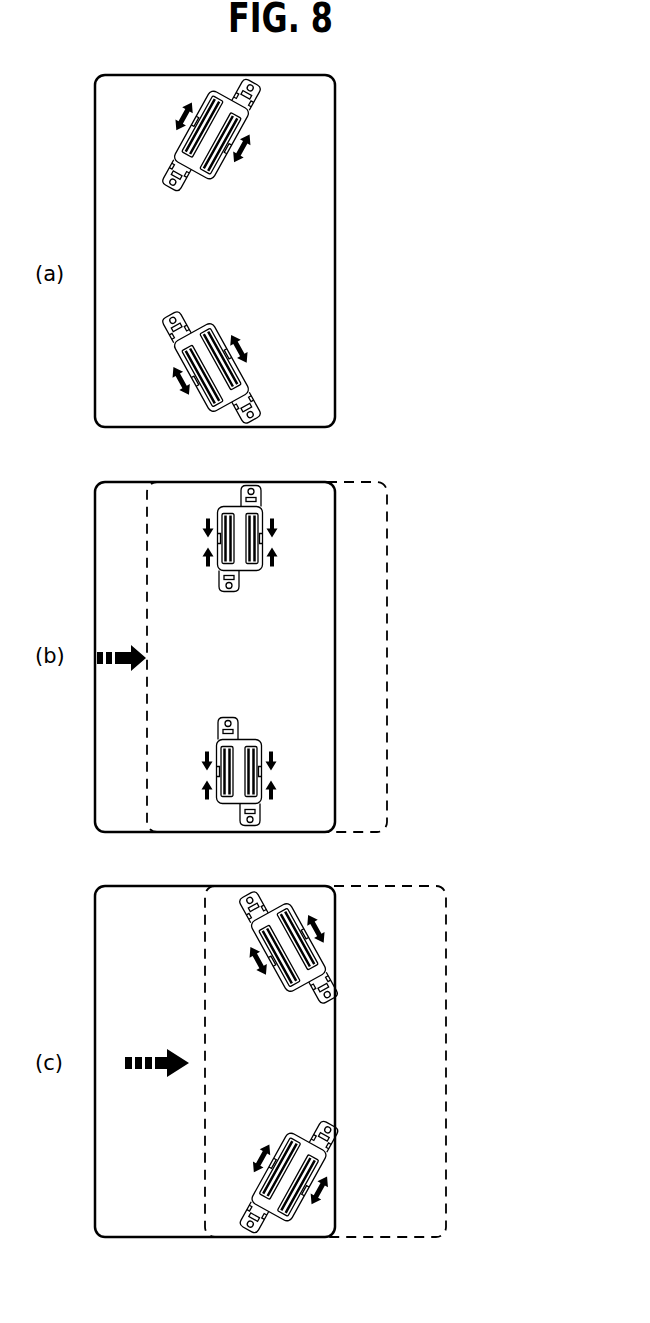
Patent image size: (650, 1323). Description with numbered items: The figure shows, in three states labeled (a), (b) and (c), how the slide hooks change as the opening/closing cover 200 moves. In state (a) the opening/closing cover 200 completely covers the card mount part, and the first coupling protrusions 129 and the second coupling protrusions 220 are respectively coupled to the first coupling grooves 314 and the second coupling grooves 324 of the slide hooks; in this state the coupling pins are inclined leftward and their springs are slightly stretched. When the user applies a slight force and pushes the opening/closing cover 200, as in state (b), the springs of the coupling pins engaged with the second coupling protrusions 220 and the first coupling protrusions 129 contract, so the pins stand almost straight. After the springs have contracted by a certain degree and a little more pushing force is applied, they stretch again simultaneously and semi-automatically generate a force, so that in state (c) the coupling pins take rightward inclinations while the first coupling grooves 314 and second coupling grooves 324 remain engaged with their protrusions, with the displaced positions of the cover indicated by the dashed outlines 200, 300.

The first coupling protrusion 129 is at (301, 656).
The first coupling groove 314 is at (253, 88).
The second coupling protrusion 220 is at (235, 656).
The second coupling groove 324 is at (172, 188).
The opening/closing cover 200 is at (388, 658).
The second housing 300 is at (447, 1063).